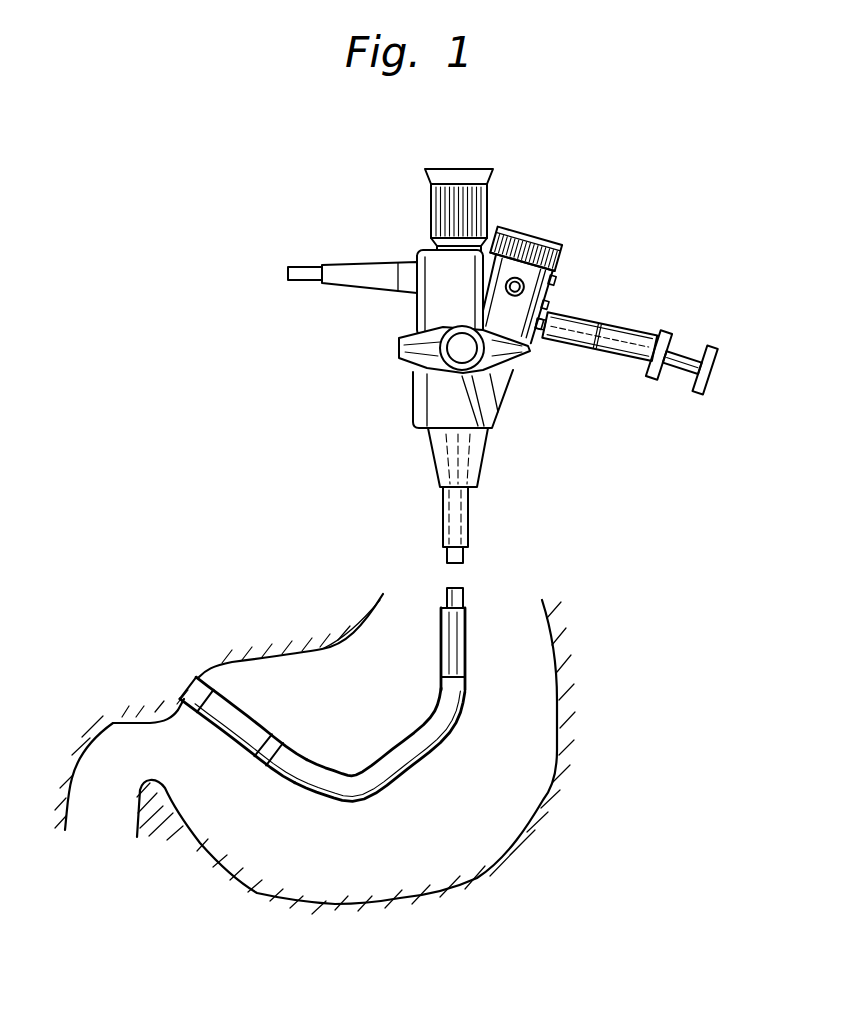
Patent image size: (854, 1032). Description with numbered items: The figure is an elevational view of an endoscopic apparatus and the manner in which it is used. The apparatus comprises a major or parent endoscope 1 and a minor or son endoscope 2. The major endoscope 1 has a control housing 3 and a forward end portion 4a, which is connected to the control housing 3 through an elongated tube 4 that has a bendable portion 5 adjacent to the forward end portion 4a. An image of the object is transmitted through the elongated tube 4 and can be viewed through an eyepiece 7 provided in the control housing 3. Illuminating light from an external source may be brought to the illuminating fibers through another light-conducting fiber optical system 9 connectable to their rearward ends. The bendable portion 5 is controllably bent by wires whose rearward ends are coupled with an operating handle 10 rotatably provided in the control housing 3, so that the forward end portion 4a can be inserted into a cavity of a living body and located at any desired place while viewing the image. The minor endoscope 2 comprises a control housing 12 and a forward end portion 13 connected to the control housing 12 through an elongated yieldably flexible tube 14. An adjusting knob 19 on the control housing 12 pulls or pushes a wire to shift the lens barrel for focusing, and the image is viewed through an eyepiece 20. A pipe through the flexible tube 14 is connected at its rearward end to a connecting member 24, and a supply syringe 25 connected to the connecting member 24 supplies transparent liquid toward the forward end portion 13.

The major endoscope 1 is at (380, 413).
The minor endoscope 2 is at (567, 289).
The control housing 3 is at (417, 257).
The elongated tube 4 is at (455, 640).
The forward end portion 4a is at (267, 767).
The bendable portion 5 is at (400, 780).
The eyepiece 7 is at (490, 196).
The light-conducting fiber optical system 9 is at (298, 276).
The operating handle 10 is at (413, 354).
The control housing 12 is at (546, 304).
The forward end portion 13 is at (187, 690).
The elongated yieldably flexible tube 14 is at (227, 727).
The adjusting knob 19 is at (549, 281).
The eyepiece 20 is at (523, 239).
The connecting member 24 is at (536, 329).
The supply syringe 25 is at (634, 352).